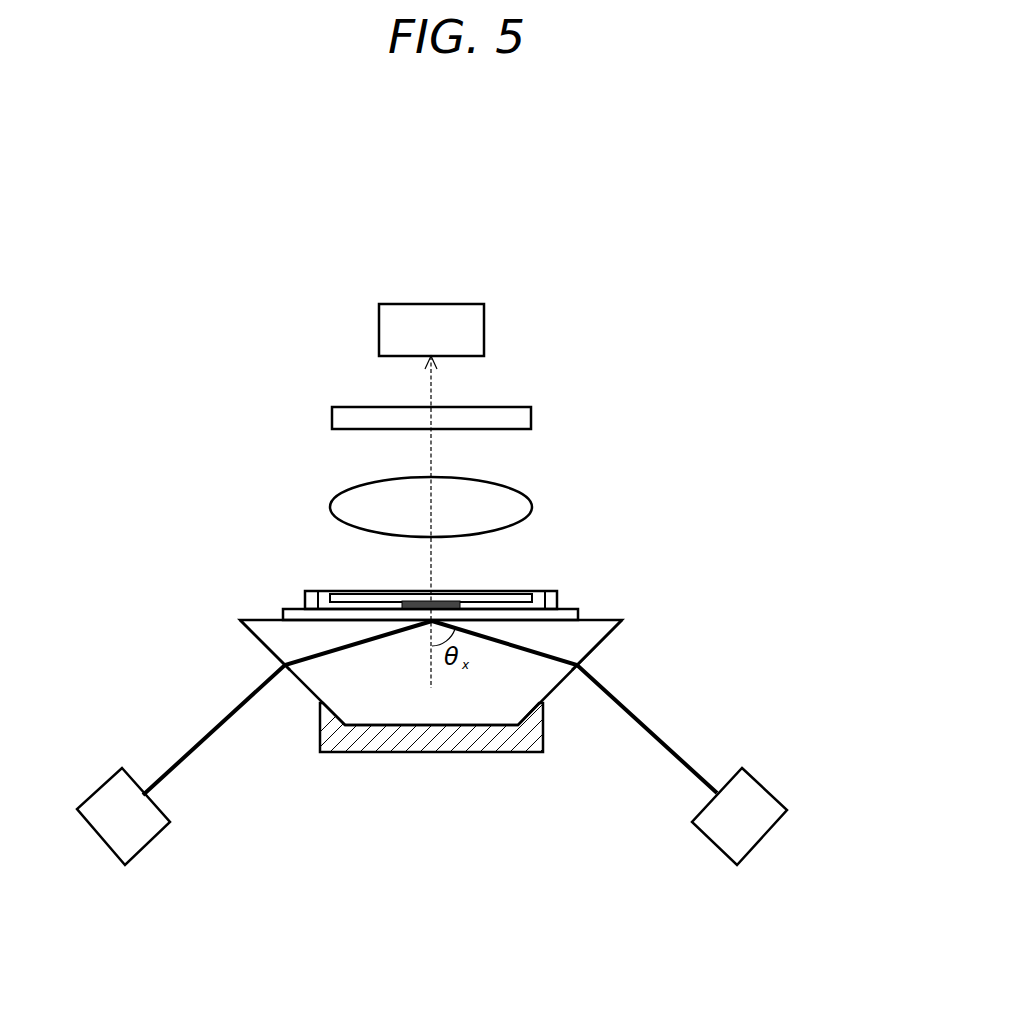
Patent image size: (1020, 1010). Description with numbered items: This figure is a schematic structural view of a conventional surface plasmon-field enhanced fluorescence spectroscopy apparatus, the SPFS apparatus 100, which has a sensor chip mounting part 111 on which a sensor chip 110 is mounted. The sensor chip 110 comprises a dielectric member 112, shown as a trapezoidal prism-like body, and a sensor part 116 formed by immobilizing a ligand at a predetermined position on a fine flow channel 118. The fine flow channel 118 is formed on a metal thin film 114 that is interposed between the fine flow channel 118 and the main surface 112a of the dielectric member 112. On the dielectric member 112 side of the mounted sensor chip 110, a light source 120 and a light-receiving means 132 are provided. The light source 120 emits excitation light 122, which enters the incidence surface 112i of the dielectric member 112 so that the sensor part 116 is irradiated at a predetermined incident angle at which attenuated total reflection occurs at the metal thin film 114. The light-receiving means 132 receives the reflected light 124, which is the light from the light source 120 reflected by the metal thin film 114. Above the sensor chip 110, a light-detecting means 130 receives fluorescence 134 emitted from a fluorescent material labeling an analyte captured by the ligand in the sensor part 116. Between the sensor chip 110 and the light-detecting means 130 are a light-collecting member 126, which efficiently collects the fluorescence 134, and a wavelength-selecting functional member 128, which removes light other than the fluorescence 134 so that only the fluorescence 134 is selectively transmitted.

The SPFS apparatus 100 is at (618, 258).
The sensor chip 110 is at (608, 567).
The sensor chip mounting part 111 is at (360, 753).
The dielectric member 112 is at (585, 635).
The main surface 112a is at (262, 618).
The incidence surface 112i is at (590, 650).
The metal thin film 114 is at (577, 610).
The sensor part 116 is at (407, 598).
The fine flow channel 118 is at (548, 590).
The light source 120 is at (757, 803).
The excitation light 122 is at (670, 755).
The reflected light 124 is at (217, 737).
The light-collecting member 126 is at (350, 507).
The wavelength-selecting functional member 128 is at (348, 415).
The light-detecting means 130 is at (470, 333).
The light-receiving means 132 is at (108, 803).
The fluorescence 134 is at (431, 455).